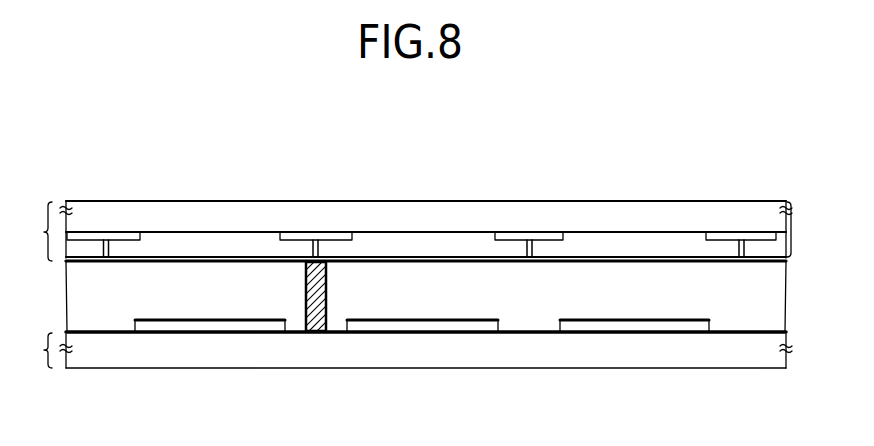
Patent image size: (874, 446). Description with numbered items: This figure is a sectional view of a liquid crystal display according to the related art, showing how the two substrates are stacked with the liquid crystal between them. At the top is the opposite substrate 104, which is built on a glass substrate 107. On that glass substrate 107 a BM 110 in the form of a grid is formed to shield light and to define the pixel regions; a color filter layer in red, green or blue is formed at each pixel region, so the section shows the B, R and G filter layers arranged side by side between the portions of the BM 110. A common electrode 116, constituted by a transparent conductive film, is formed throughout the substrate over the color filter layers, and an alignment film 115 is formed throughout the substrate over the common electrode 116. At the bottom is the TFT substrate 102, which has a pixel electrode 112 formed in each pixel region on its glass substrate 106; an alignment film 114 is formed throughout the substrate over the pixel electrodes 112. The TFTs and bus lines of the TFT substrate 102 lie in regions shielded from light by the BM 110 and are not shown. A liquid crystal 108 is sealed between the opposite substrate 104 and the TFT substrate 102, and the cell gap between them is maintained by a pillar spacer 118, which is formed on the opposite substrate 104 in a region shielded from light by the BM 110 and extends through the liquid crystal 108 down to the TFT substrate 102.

The TFT substrate 102 is at (44, 351).
The opposite substrate 104 is at (44, 232).
The glass substrate 106 is at (746, 355).
The glass substrate 107 is at (671, 213).
The liquid crystal 108 is at (80, 314).
The BM 110 is at (316, 232).
The pixel electrode 112 is at (688, 327).
The alignment film 114 is at (787, 332).
The alignment film 115 is at (787, 262).
The common electrode 116 is at (791, 250).
The pillar spacer 118 is at (329, 294).